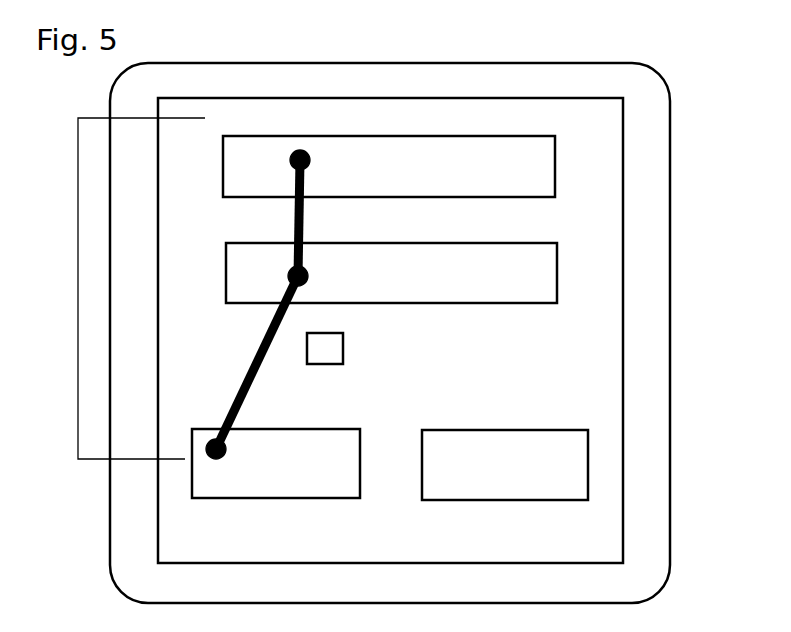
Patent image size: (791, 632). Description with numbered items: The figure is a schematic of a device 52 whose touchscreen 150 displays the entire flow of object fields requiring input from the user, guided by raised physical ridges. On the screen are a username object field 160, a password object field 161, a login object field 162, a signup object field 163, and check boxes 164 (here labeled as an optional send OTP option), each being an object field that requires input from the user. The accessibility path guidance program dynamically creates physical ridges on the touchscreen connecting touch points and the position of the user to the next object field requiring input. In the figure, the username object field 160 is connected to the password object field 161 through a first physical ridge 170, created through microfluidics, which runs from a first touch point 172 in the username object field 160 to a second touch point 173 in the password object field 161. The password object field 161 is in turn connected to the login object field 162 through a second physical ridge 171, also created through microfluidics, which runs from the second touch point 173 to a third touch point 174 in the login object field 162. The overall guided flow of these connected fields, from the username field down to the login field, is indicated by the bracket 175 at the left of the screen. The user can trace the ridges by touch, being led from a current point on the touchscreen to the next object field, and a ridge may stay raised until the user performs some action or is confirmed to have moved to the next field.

The mobile device 52 is at (568, 62).
The display screen 150 is at (590, 110).
The username object field 160 is at (557, 173).
The password object field 161 is at (552, 283).
The login object field 162 is at (270, 500).
The signup object field 163 is at (590, 447).
The check boxes 164 is at (340, 365).
The first physical ridge 170 is at (295, 223).
The second physical ridge 171 is at (248, 365).
The first touch point 172 is at (292, 152).
The second touch point 173 is at (291, 268).
The third touch point 174 is at (208, 442).
The gesture input region 175 is at (75, 305).